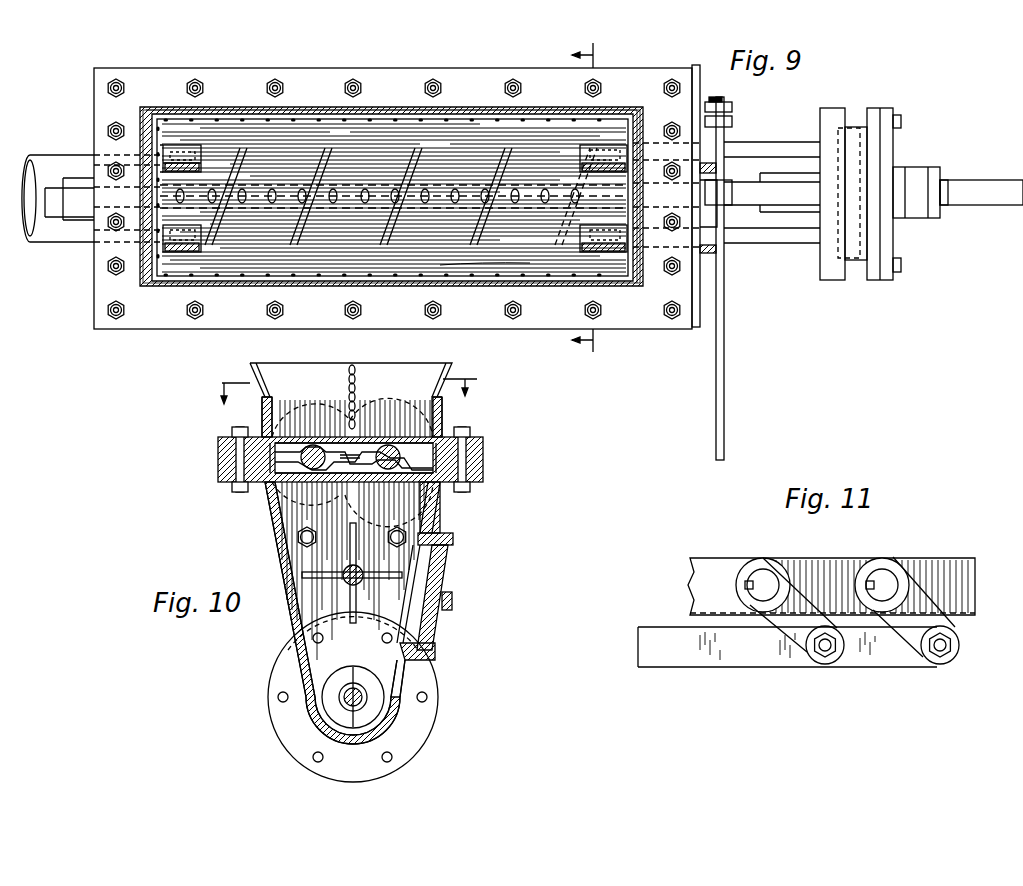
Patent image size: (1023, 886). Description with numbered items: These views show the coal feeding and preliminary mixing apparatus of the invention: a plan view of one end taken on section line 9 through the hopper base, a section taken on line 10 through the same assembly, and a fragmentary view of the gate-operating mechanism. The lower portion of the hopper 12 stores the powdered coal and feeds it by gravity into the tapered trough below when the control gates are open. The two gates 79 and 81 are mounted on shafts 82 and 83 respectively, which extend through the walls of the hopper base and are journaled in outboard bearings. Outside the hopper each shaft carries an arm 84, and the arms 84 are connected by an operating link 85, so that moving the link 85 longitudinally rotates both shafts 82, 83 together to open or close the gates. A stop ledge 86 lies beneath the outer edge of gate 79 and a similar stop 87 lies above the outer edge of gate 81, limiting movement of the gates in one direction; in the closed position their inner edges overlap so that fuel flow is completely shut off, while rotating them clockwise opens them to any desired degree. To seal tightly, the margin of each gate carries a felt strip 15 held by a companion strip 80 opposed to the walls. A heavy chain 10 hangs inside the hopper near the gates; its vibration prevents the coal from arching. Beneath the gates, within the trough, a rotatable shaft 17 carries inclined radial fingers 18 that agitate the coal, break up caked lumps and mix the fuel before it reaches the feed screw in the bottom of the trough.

In FIG. 10, the section line 9— 9 is at (348, 388).
In FIG. 9, the heavy chain 10 is at (610, 360).
In FIG. 10, the heavy chain 10 is at (380, 358).
In FIG. 9, the lower portion of hopper 12 is at (468, 283).
In FIG. 10, the lower portion of hopper 12 is at (450, 364).
In FIG. 11, the lower portion of hopper 12 is at (836, 565).
In FIG. 9, the felt strip 15 is at (392, 110).
In FIG. 10, the felt strip 15 is at (270, 503).
In FIG. 10, the rotatable shaft 17 is at (358, 570).
In FIG. 10, the spokes or fingers 18 is at (401, 578).
In FIG. 9, the gate 79 is at (393, 196).
In FIG. 10, the gate 79 is at (332, 427).
In FIG. 9, the companion strip 80 is at (311, 122).
In FIG. 10, the companion strip 80 is at (290, 430).
In FIG. 9, the gate 81 is at (482, 173).
In FIG. 10, the gate 81 is at (370, 427).
In FIG. 9, the shaft 82 is at (195, 222).
In FIG. 10, the shaft 82 is at (310, 463).
In FIG. 11, the shaft 82 is at (758, 575).
In FIG. 9, the shaft 83 is at (195, 177).
In FIG. 10, the shaft 83 is at (403, 437).
In FIG. 11, the shaft 83 is at (882, 575).
In FIG. 11, the arm 84 is at (790, 607).
In FIG. 9, the operating link 85 is at (724, 386).
In FIG. 11, the operating link 85 is at (708, 662).
In FIG. 9, the stop ledge 86 is at (503, 272).
In FIG. 10, the stop ledge 86 is at (263, 490).
In FIG. 9, the stop 87 is at (536, 113).
In FIG. 10, the stop 87 is at (443, 427).